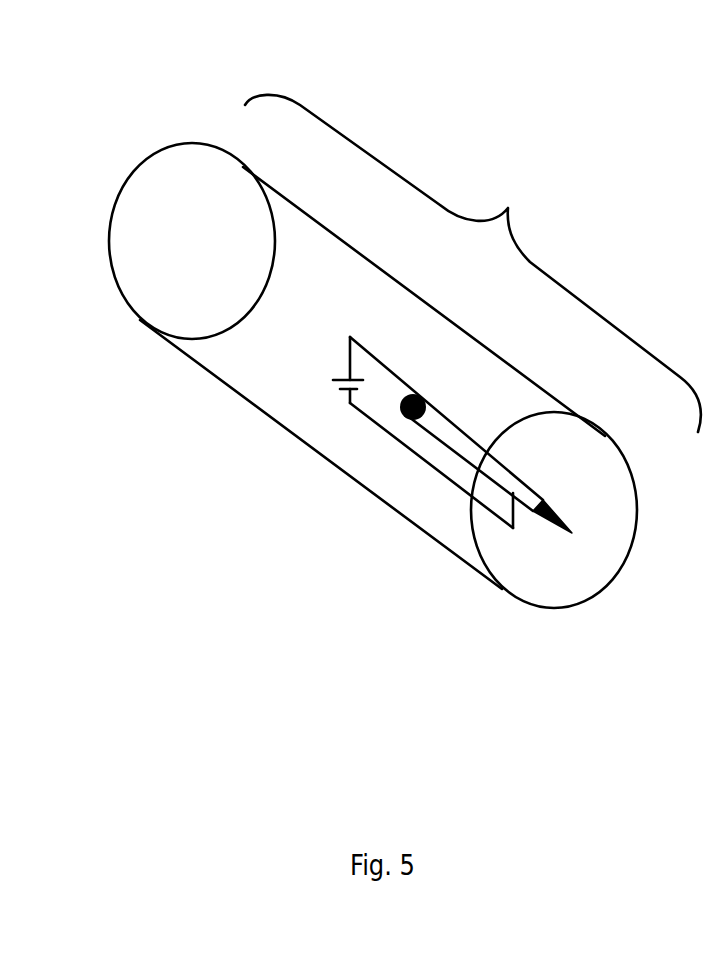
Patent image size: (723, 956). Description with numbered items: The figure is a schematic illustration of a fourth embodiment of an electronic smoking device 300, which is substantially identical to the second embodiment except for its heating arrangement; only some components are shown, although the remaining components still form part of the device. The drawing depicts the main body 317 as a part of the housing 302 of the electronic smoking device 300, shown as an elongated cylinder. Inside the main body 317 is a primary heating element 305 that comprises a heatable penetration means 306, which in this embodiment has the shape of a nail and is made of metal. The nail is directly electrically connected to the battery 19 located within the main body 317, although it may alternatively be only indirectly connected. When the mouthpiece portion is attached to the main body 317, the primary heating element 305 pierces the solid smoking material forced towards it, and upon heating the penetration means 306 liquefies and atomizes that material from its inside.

The electronic smoking device 300 is at (123, 43).
The housing 302 is at (241, 412).
The primary heating element 305 is at (492, 401).
The heatable penetration means 306 is at (527, 498).
The main body 317 is at (473, 263).
The battery 19 is at (353, 393).